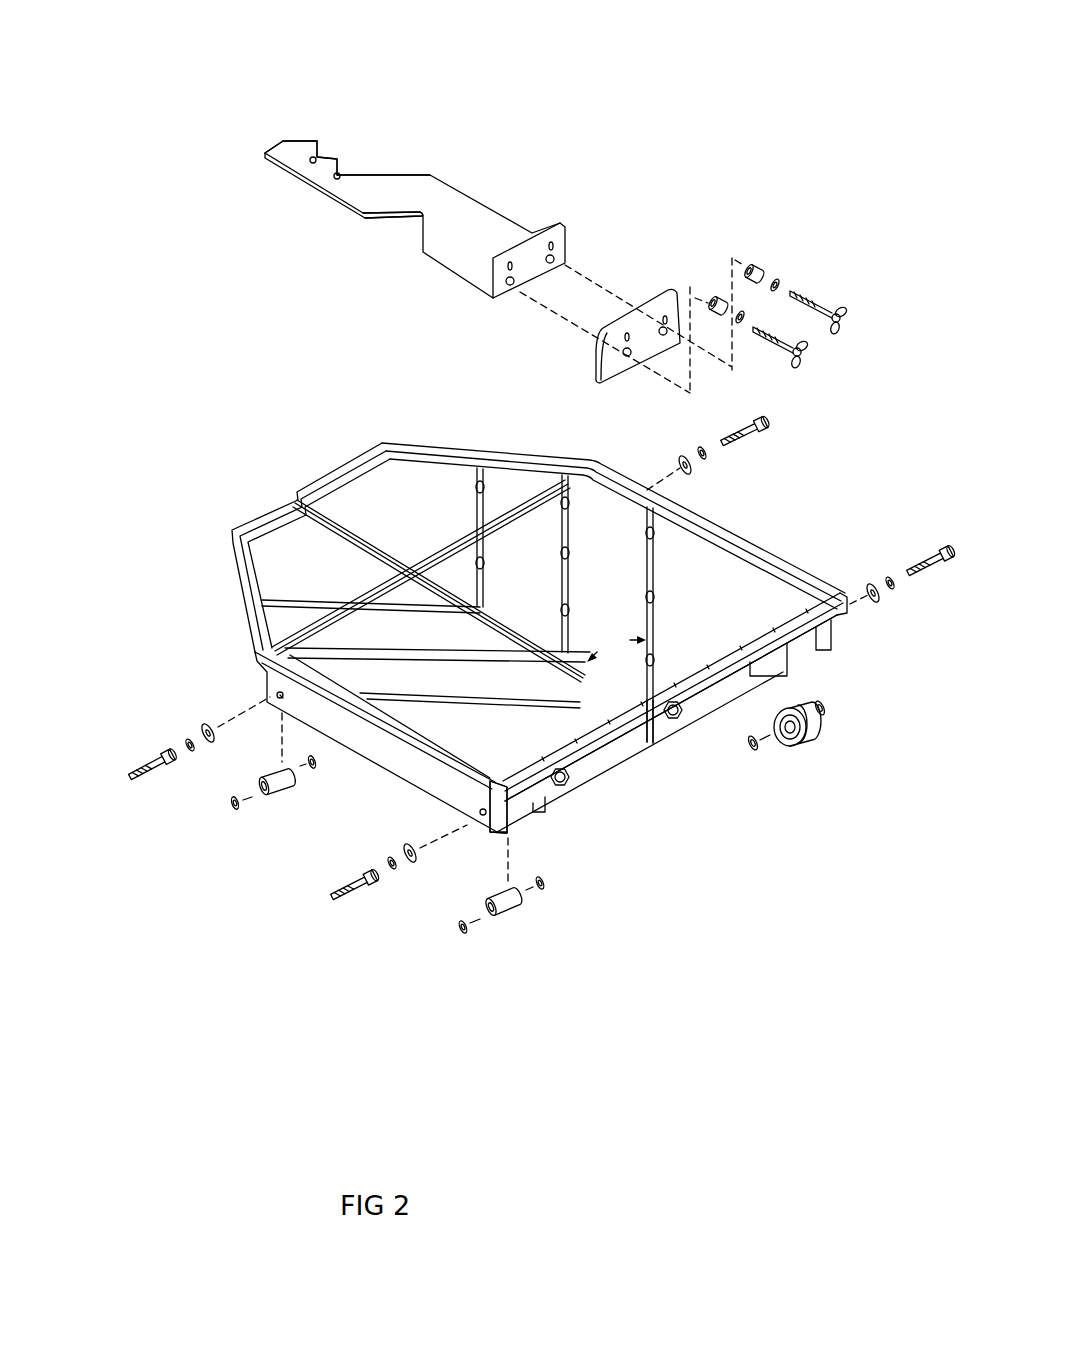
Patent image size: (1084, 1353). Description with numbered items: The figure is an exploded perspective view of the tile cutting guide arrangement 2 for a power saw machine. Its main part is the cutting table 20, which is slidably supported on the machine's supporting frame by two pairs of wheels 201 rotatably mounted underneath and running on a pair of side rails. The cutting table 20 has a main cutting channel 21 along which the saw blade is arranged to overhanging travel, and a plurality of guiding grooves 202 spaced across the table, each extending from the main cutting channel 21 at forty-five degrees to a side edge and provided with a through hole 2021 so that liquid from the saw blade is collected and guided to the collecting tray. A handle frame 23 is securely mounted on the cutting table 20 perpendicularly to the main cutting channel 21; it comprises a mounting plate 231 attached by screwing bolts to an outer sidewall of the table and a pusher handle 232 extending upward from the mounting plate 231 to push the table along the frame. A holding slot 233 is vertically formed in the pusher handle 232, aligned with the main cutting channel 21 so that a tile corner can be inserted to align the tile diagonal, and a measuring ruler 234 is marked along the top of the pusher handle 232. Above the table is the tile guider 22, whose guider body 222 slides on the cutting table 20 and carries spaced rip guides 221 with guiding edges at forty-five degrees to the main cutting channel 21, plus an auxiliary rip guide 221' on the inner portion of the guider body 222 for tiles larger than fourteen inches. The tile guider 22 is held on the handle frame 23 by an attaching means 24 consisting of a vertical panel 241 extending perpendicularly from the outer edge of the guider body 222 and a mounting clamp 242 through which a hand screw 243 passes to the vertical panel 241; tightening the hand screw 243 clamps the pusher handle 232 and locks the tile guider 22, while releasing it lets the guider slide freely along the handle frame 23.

The tile cutting guide arrangement 2 is at (195, 324).
The cutting table 20 is at (232, 536).
The main cutting channel 21 is at (358, 534).
The tile guider 22 is at (496, 114).
The handle frame 23 is at (720, 923).
The attaching means 24 is at (746, 185).
The wheels 201 is at (277, 790).
The guiding grooves 202 is at (650, 567).
The through hole 2021 is at (570, 556).
The rip guides 221 is at (377, 203).
The auxiliary rip guide 221' is at (297, 109).
The guider body 222 is at (493, 227).
The mounting plate 231 is at (508, 808).
The pusher handle 232 is at (547, 774).
The holding slot 233 is at (653, 738).
The measuring ruler 234 is at (618, 742).
The vertical panel 241 is at (567, 223).
The mounting clamp 242 is at (666, 290).
The hand screw 243 is at (779, 335).